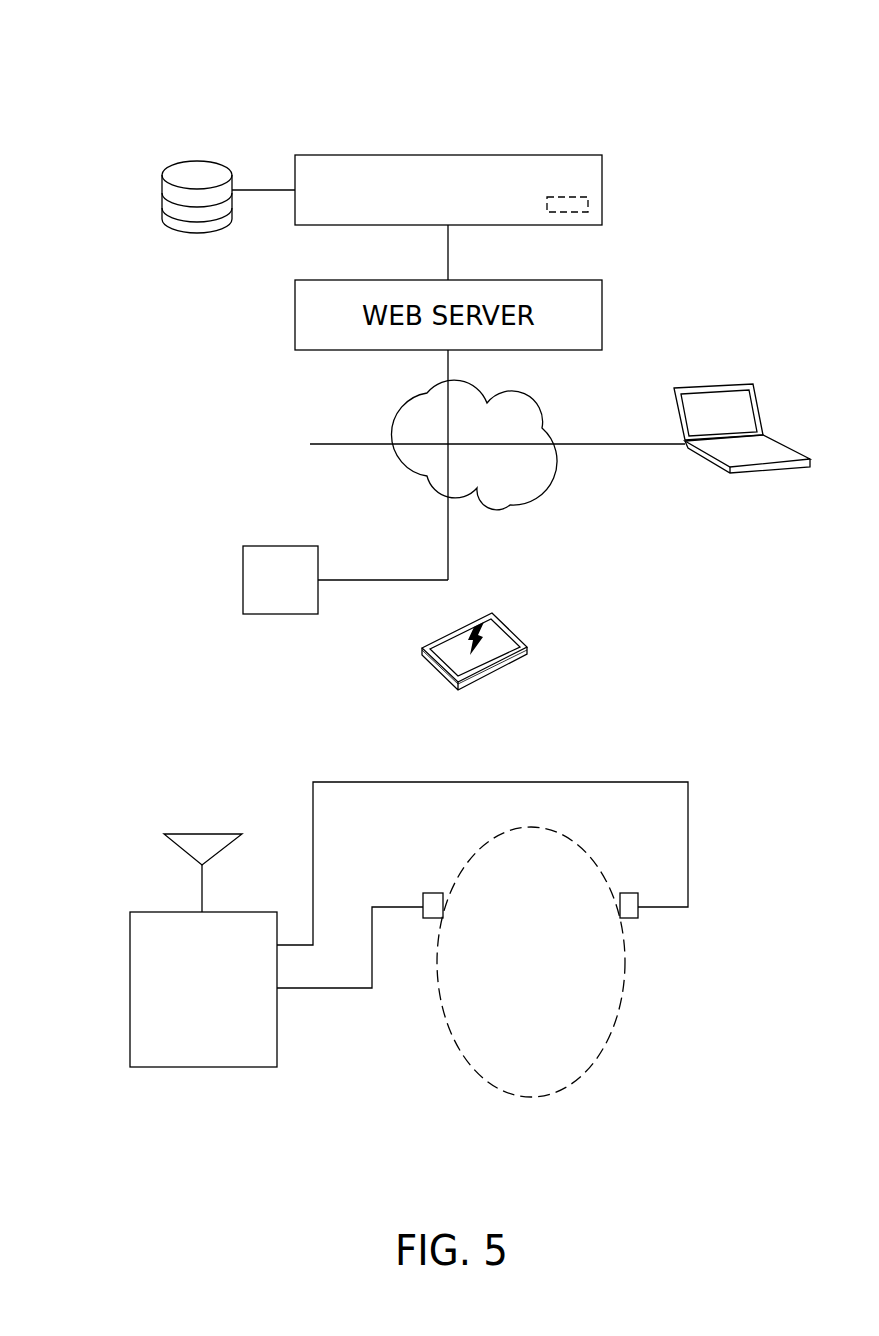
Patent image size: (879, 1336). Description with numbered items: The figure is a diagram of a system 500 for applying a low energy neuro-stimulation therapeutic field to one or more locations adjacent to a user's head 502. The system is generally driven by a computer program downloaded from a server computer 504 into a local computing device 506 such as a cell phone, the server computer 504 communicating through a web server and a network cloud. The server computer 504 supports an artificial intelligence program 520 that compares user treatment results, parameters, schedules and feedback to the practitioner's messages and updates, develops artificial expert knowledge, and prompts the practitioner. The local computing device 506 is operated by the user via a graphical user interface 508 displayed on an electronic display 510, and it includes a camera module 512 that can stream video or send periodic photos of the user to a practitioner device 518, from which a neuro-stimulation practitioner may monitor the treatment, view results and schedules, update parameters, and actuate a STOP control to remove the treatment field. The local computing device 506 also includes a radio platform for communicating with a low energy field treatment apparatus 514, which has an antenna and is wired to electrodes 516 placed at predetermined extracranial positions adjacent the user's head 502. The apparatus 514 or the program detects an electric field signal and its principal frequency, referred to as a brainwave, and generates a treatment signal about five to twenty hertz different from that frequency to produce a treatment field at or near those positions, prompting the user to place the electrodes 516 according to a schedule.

The system 500 is at (322, 50).
The user's head 502 is at (625, 980).
The server computer 504 is at (525, 155).
The local computing device 506 is at (528, 651).
The graphical user interface 508 is at (480, 625).
The electronic display 510 is at (433, 665).
The camera module 512 is at (243, 580).
The low energy field treatment apparatus 514 is at (130, 953).
The electrodes 516 is at (435, 892).
The practitioner device 518 is at (702, 458).
The artificial intelligence program 520 is at (588, 200).